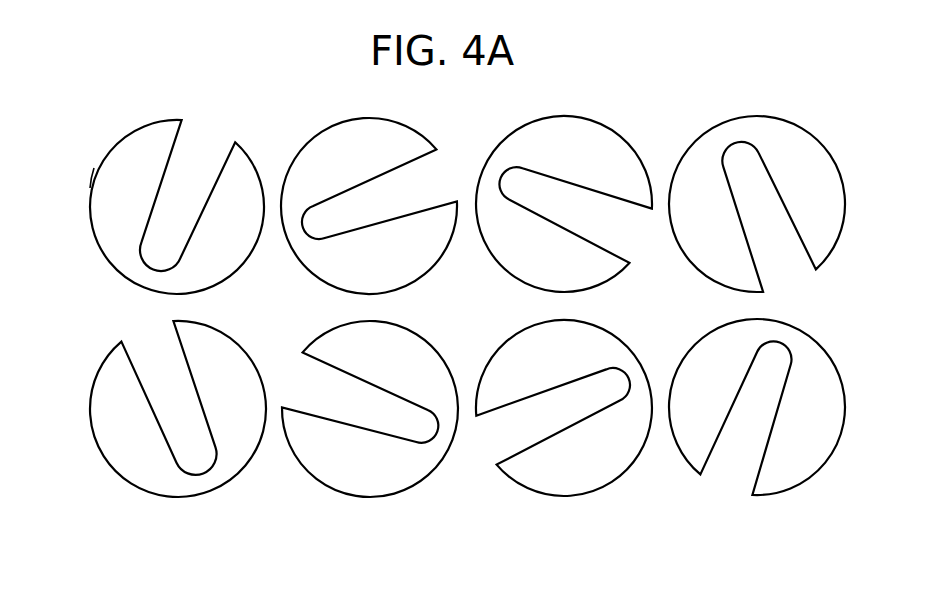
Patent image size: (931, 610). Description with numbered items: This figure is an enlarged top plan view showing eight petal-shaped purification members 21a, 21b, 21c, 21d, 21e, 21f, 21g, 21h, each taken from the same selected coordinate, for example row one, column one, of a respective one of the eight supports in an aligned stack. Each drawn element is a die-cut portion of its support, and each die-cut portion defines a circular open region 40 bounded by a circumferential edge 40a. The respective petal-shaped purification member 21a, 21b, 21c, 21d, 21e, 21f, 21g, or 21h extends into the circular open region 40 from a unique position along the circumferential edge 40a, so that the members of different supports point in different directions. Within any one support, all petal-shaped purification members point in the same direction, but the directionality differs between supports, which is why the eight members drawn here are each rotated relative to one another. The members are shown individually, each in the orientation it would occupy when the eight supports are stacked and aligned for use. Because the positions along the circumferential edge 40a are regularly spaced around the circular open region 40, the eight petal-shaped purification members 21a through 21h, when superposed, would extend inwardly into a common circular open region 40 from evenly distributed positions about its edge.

The circular open region 40 is at (122, 147).
The circumferential edge 40a is at (98, 172).
The petal-shaped purification member 21a is at (188, 177).
The petal-shaped purification member 21b is at (419, 210).
The petal-shaped purification member 21c is at (618, 228).
The petal-shaped purification member 21d is at (768, 240).
The petal-shaped purification member 21e is at (163, 372).
The petal-shaped purification member 21f is at (351, 405).
The petal-shaped purification member 21g is at (553, 435).
The petal-shaped purification member 21h is at (747, 432).